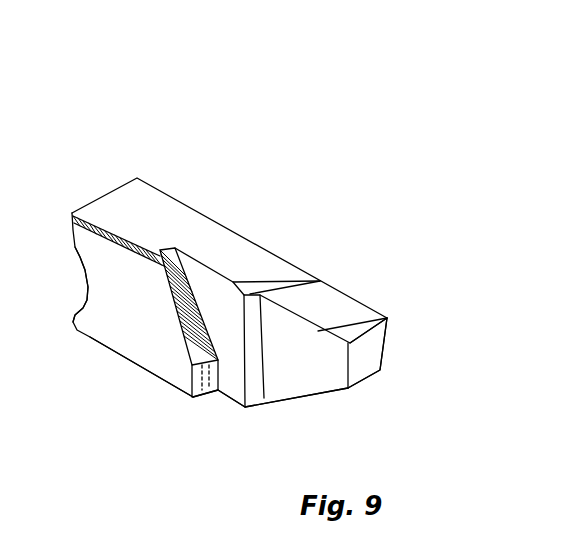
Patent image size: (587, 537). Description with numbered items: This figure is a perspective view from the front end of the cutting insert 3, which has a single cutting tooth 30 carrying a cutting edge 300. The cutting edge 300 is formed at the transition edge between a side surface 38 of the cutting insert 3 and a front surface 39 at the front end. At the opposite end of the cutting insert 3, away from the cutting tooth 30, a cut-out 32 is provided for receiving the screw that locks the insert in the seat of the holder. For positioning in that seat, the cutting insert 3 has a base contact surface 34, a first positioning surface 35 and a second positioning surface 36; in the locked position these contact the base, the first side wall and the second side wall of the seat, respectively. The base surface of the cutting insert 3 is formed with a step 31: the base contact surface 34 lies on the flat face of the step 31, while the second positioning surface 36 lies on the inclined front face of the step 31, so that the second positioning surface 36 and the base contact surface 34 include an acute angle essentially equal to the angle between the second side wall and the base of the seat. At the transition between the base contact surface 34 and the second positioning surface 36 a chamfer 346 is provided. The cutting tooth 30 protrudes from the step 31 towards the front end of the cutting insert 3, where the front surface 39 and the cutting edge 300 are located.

The cutting insert 3 is at (275, 104).
The cutting tooth 30 is at (365, 268).
The cutting edge 300 is at (358, 333).
The step 31 is at (230, 407).
The cut-out 32 is at (60, 283).
The base contact surface 34 is at (140, 333).
The first positioning surface 35 is at (148, 367).
The second positioning surface 36 is at (175, 248).
The chamfer 346 is at (160, 268).
The side surface 38 is at (115, 198).
The front surface 39 is at (362, 365).